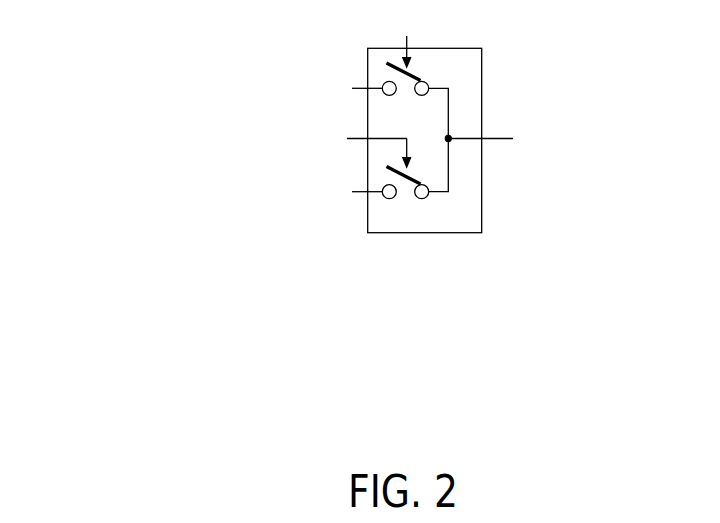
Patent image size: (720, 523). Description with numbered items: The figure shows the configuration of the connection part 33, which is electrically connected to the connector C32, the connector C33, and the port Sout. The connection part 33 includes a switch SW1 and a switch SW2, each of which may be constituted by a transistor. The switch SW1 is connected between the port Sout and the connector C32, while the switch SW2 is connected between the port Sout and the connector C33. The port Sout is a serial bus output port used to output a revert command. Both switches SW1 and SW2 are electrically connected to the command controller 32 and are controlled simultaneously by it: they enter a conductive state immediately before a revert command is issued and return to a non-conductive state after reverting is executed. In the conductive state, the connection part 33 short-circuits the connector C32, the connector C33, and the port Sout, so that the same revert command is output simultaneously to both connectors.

The connection part 33 is at (532, 368).
The switch SW1 is at (420, 70).
The switch SW2 is at (405, 205).
The command controller 32 is at (292, 87).
The connector C32 is at (268, 89).
The connector C33 is at (268, 191).
The port Sout is at (556, 138).